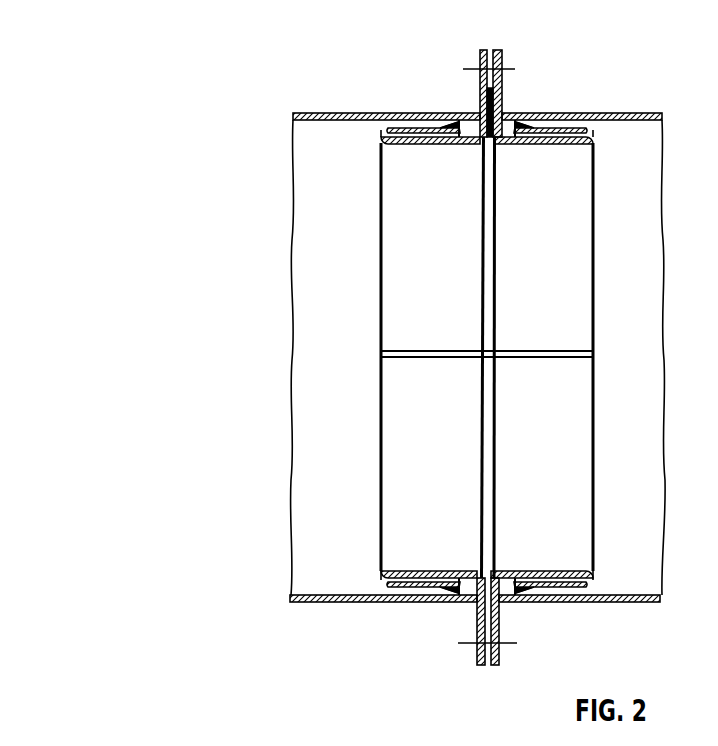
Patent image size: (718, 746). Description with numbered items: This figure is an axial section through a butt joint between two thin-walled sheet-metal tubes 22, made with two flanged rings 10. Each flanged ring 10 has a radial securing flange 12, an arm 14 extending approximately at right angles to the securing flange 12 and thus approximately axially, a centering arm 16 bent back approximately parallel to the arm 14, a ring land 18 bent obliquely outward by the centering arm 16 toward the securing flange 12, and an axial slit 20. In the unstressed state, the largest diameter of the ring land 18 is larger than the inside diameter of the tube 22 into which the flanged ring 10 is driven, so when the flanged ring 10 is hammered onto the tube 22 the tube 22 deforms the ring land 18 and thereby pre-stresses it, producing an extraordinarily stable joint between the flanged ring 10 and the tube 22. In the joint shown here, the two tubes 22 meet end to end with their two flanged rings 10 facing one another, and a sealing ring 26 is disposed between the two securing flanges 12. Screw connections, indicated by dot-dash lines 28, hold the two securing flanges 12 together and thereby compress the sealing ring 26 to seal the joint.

The flanged ring 10 is at (380, 296).
The radial securing flange 12 is at (483, 50).
The arm 14 is at (436, 146).
The centering arm 16 is at (400, 128).
The ring land 18 is at (448, 124).
The axial slit 20 is at (382, 354).
The tube 22 is at (330, 113).
The sealing ring 26 is at (497, 98).
The dot-dash lines 28 is at (470, 66).